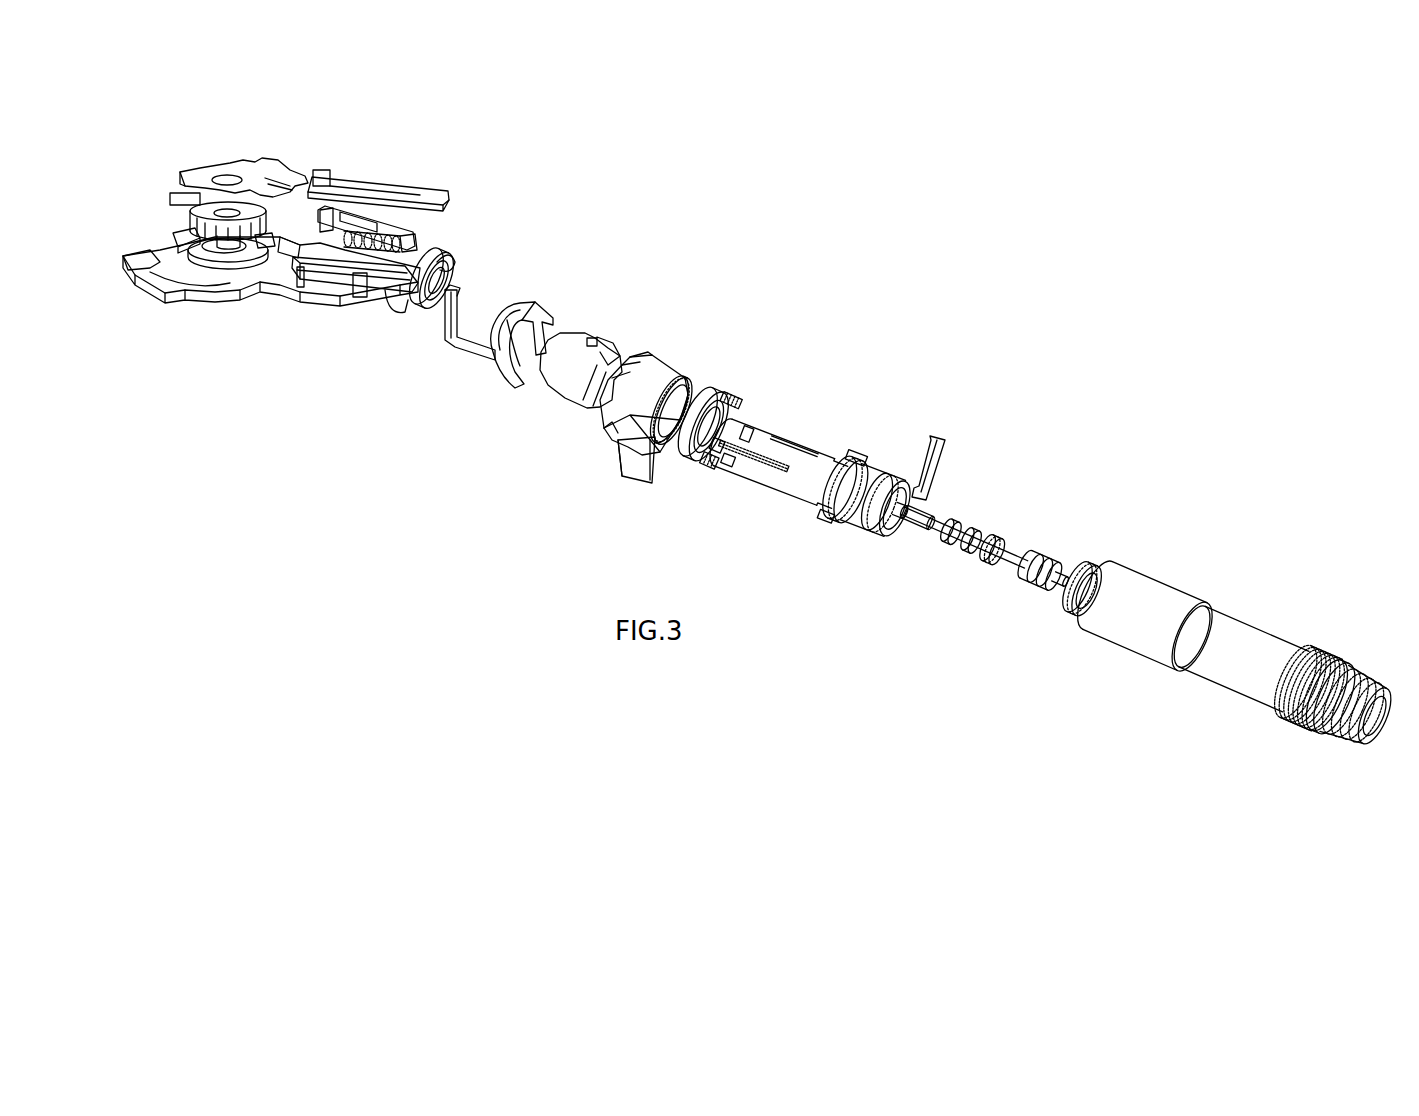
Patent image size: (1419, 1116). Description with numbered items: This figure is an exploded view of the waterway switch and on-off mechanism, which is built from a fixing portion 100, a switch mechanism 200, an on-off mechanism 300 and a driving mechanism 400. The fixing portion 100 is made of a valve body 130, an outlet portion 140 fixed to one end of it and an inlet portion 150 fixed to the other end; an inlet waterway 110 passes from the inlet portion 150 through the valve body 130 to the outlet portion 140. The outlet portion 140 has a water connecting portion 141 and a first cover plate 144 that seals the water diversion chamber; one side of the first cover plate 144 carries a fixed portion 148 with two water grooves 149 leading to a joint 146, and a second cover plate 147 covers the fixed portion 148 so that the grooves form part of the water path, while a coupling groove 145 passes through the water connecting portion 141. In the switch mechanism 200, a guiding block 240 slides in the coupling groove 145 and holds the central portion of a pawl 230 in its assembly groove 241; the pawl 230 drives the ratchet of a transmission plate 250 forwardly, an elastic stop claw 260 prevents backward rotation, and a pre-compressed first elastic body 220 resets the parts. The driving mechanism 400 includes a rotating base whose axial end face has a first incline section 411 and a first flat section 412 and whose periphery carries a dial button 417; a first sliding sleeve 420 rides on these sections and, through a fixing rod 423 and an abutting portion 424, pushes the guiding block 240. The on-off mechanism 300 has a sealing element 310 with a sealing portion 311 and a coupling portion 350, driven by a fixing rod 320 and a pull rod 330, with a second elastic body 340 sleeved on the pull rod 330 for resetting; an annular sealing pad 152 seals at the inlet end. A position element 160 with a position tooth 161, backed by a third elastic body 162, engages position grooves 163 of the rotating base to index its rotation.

The fixing portion 100 is at (837, 430).
The inlet waterway 110 is at (1375, 716).
The valve body 130 is at (811, 475).
The outlet portion 140 is at (478, 218).
The water connecting portion 141 is at (289, 247).
The first cover plate 144 is at (176, 268).
The coupling groove 145 is at (271, 269).
The joint 146 is at (422, 278).
The second cover plate 147 is at (378, 190).
The fixed portion 148 is at (355, 277).
The water grooves 149 is at (332, 282).
The inlet portion 150 is at (1207, 592).
The annular sealing pad 152 is at (1082, 589).
The position element 160 is at (707, 425).
The position tooth 161 is at (731, 400).
The third elastic body 162 is at (713, 452).
The position grooves 163 is at (671, 410).
The switch mechanism 200 is at (239, 181).
The first elastic body 220 is at (408, 243).
The pawl 230 is at (228, 253).
The guiding block 240 is at (372, 241).
The assembly groove 241 is at (366, 228).
The transmission plate 250 is at (228, 225).
The elastic stop claw 260 is at (186, 240).
The on-off mechanism 300 is at (1057, 472).
The sealing element 310 is at (1044, 572).
The sealing portion 311 is at (1040, 570).
The fixing rod 320 is at (928, 468).
The pull rod 330 is at (964, 537).
The second elastic body 340 is at (961, 536).
The coupling portion 350 is at (992, 549).
The driving mechanism 400 is at (618, 270).
The first incline section 411 is at (644, 403).
The first flat section 412 is at (628, 392).
The dial button 417 is at (636, 460).
The first sliding sleeve 420 is at (522, 345).
The fixing rod 423 is at (470, 325).
The abutting portion 424 is at (452, 290).